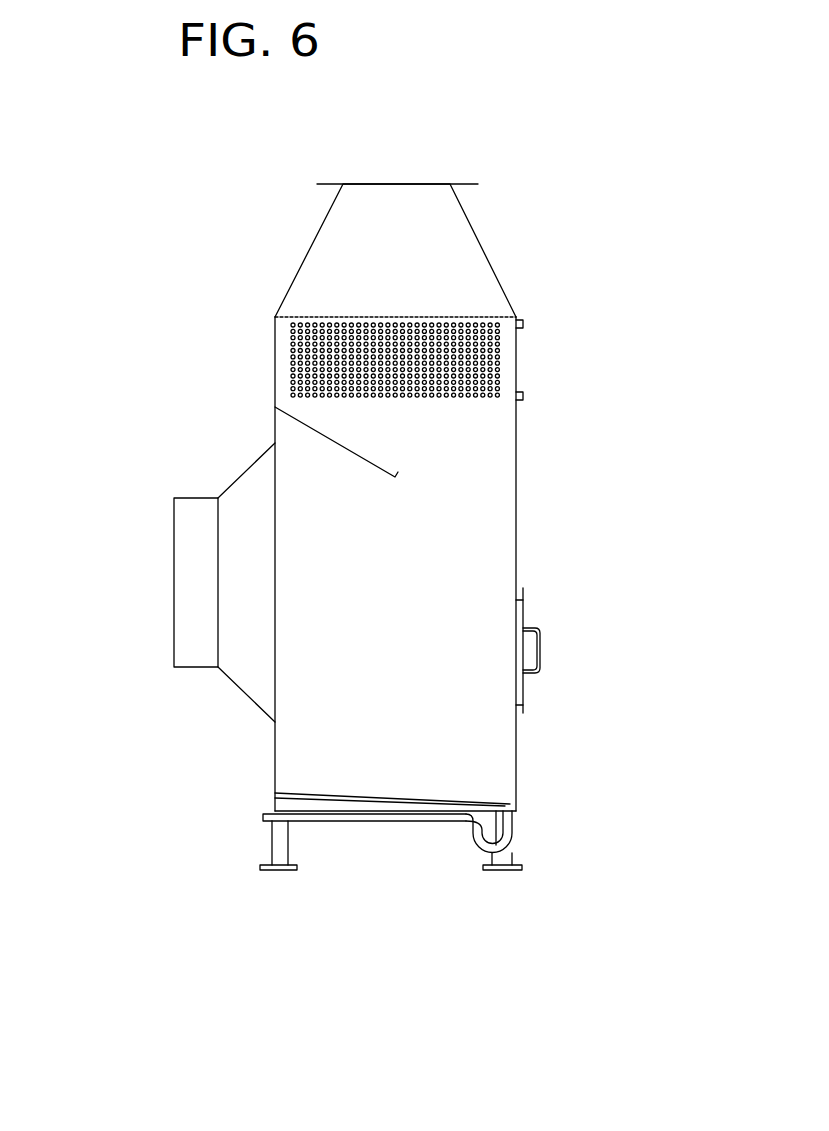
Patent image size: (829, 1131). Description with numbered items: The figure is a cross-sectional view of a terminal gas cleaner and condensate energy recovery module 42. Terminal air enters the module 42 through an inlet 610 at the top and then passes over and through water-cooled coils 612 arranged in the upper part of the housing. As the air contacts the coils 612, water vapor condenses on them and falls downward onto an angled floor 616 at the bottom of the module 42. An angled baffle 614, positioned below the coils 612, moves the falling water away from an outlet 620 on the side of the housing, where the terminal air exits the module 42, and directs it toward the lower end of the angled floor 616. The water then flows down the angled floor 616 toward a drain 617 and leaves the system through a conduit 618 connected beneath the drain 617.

The terminal gas cleaner and condensate energy recovery module 42 is at (590, 213).
The inlet 610 is at (427, 183).
The water-cooled coils 612 is at (483, 370).
The angled baffle 614 is at (303, 427).
The angled floor 616 is at (312, 793).
The drain 617 is at (513, 808).
The conduit 618 is at (349, 822).
The outlet 620 is at (177, 643).